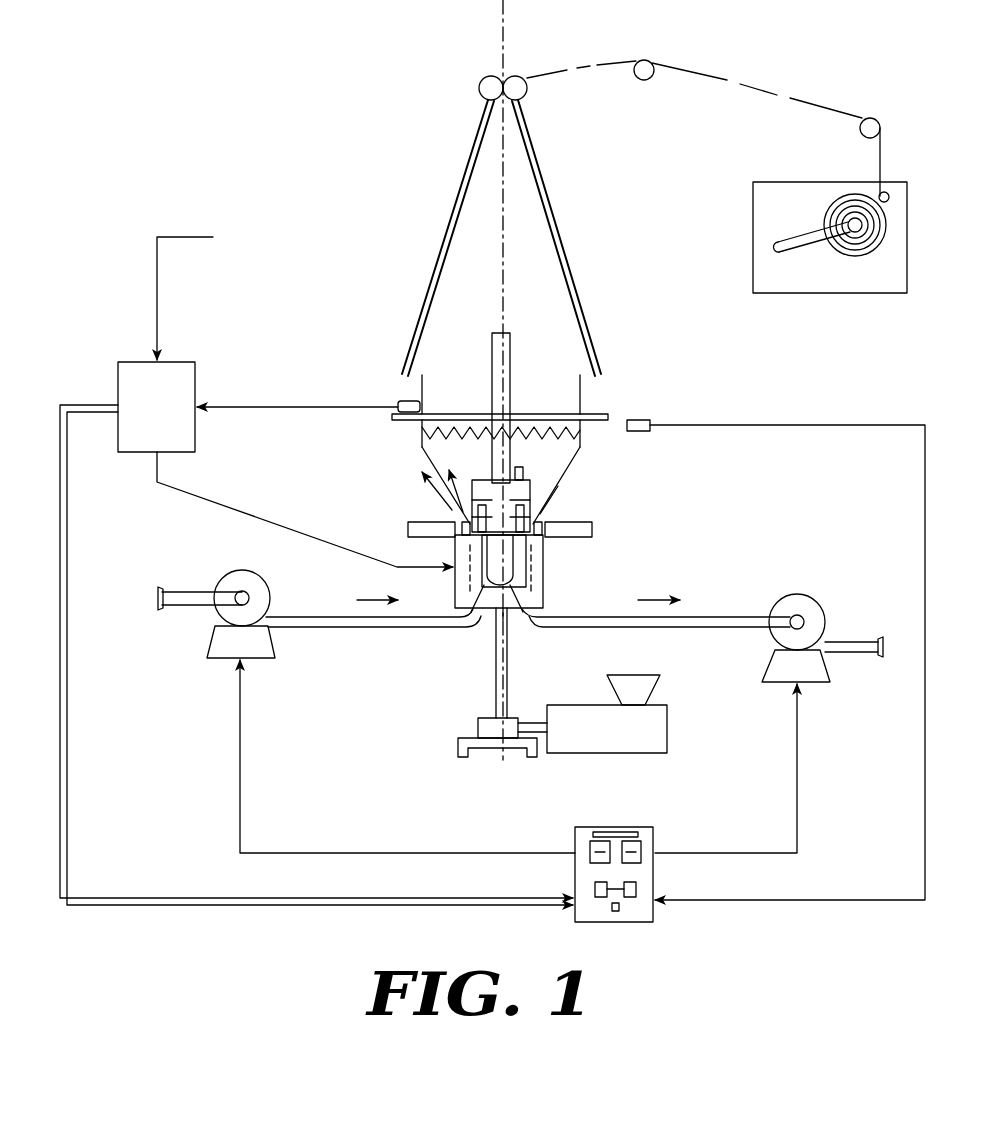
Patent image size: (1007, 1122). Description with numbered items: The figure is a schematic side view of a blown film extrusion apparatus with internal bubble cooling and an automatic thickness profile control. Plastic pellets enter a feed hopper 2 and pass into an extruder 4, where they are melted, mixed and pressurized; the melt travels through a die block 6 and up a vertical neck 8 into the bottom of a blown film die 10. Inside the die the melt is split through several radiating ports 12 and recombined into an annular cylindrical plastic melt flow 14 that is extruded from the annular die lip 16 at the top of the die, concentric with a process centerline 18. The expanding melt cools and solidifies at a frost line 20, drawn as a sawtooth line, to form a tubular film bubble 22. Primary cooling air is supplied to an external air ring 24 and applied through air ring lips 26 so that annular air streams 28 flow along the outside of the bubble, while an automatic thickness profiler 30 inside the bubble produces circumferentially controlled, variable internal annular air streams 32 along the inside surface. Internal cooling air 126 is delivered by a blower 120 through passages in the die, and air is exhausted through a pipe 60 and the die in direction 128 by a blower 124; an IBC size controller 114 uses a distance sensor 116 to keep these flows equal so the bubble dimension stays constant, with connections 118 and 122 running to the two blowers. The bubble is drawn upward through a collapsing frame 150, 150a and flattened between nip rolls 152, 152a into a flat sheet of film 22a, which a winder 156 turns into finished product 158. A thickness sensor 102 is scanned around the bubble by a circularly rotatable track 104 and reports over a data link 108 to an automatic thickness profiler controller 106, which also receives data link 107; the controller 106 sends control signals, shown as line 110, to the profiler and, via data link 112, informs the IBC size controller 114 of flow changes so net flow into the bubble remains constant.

The feed hopper 2 is at (655, 692).
The extruder 4 is at (670, 740).
The die block 6 is at (478, 728).
The vertical neck 8 is at (494, 662).
The blown film die 10 is at (548, 582).
The ports 12 is at (510, 622).
The annular cylindrical plastic melt flow 14 is at (530, 596).
The die lip 16 is at (540, 556).
The process centerline 18 is at (505, 278).
The frost line 20 is at (430, 448).
The tubular film bubble 22 is at (582, 383).
The flat sheet of film 22a is at (603, 67).
The external air ring 24 is at (593, 531).
The air ring lips 26 is at (537, 526).
The annular air streams 28 is at (440, 500).
The automatic thickness profiler 30 is at (556, 484).
The internal annular air streams 32 is at (468, 488).
The pipe 60 is at (512, 356).
The thickness sensor 102 is at (398, 404).
The circularly rotatable track 104 is at (610, 416).
The automatic thickness profiler controller 106 is at (195, 364).
The data link 107 is at (207, 237).
The data link 108 is at (310, 409).
The control line 110 is at (218, 509).
The data link 112 is at (68, 725).
The IBC size controller 114 is at (616, 826).
The distance sensor 116 is at (645, 418).
The control line 118 is at (242, 736).
The blower 120 is at (220, 612).
The control line 122 is at (794, 766).
The blower 124 is at (823, 615).
The internal cooling air 126 is at (362, 596).
The air flow out of bubble 128 is at (662, 594).
The collapsing frame 150 is at (452, 220).
The collapsing frame 150a is at (556, 234).
The nip roll 152 is at (482, 96).
The nip roll 152a is at (522, 97).
The winder 156 is at (802, 182).
The finished product 158 is at (880, 258).